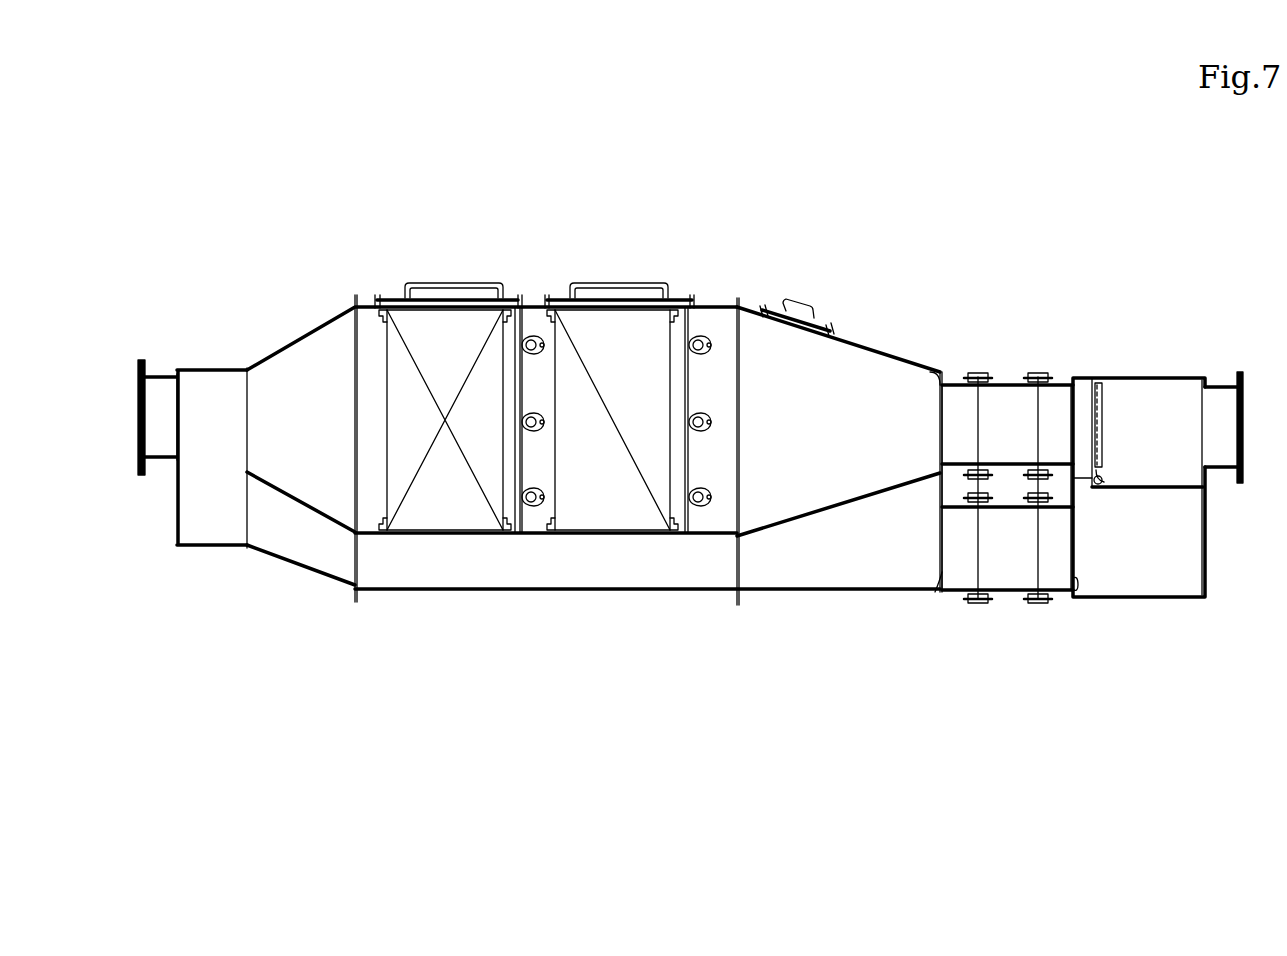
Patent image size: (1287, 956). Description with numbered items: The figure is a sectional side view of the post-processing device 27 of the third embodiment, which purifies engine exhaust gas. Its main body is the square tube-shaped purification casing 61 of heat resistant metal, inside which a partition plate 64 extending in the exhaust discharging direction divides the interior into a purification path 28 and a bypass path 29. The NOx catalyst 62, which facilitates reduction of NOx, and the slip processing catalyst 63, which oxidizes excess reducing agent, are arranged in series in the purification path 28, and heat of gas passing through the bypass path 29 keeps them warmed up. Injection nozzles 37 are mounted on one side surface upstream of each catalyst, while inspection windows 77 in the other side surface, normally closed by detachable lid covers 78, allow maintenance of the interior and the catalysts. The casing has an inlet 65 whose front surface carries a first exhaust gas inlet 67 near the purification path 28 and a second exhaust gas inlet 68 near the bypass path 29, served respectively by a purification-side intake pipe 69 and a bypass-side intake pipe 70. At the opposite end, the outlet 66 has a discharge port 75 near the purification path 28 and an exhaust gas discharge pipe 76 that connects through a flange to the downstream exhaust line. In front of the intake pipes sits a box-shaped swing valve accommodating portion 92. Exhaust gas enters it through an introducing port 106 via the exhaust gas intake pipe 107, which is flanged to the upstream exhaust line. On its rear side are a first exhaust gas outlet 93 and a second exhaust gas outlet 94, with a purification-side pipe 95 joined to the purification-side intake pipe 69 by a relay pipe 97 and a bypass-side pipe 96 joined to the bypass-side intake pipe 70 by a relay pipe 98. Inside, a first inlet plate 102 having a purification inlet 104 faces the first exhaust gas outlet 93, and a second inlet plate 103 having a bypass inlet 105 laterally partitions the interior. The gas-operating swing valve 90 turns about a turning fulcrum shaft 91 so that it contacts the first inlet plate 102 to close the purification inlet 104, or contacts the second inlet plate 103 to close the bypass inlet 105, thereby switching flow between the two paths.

The post-processing device 27 is at (356, 244).
The purification path 28 is at (839, 467).
The bypass path 29 is at (593, 438).
The injection nozzle 37 is at (531, 336).
The purification casing 61 is at (868, 338).
The NOx catalyst 62 is at (608, 510).
The slip processing catalyst 63 is at (446, 505).
The partition plate 64 is at (300, 488).
The inlet 65 is at (902, 548).
The outlet 66 is at (215, 507).
The first exhaust gas inlet 67 is at (935, 385).
The second exhaust gas inlet 68 is at (940, 574).
The purification-side intake pipe 69 is at (953, 383).
The bypass-side intake pipe 70 is at (950, 595).
The discharge port 75 is at (185, 382).
The exhaust gas discharge pipe 76 is at (160, 470).
The inspection window 77 is at (436, 305).
The lid cover 78 is at (479, 298).
The swing valve 90 is at (1111, 424).
The turning fulcrum shaft 91 is at (1098, 485).
The swing valve accommodating portion 92 is at (1137, 600).
The first exhaust gas outlet 93 is at (1068, 383).
The second exhaust gas outlet 94 is at (1068, 582).
The purification-side pipe 95 is at (1062, 383).
The bypass-side pipe 96 is at (1048, 595).
The relay pipe 97 is at (1005, 383).
The relay pipe 98 is at (1007, 595).
The first inlet plate 102 is at (1098, 383).
The second inlet plate 103 is at (1203, 530).
The purification inlet 104 is at (1093, 452).
The bypass inlet 105 is at (1148, 490).
The introducing port 106 is at (1205, 392).
The exhaust gas intake pipe 107 is at (1240, 380).